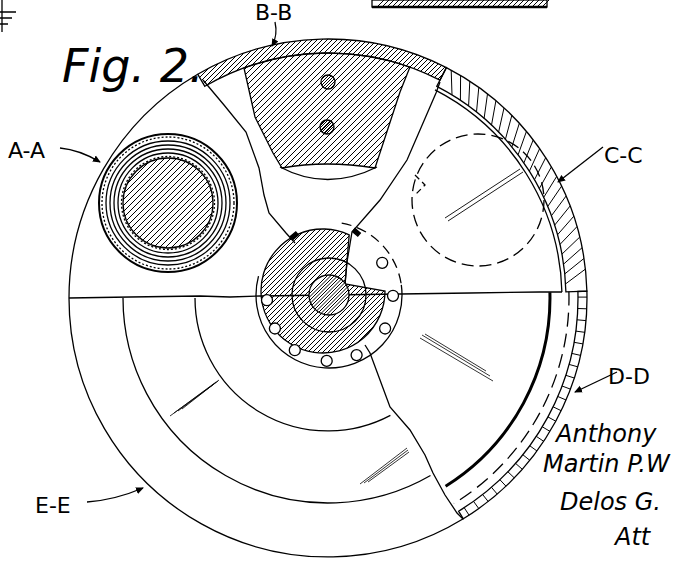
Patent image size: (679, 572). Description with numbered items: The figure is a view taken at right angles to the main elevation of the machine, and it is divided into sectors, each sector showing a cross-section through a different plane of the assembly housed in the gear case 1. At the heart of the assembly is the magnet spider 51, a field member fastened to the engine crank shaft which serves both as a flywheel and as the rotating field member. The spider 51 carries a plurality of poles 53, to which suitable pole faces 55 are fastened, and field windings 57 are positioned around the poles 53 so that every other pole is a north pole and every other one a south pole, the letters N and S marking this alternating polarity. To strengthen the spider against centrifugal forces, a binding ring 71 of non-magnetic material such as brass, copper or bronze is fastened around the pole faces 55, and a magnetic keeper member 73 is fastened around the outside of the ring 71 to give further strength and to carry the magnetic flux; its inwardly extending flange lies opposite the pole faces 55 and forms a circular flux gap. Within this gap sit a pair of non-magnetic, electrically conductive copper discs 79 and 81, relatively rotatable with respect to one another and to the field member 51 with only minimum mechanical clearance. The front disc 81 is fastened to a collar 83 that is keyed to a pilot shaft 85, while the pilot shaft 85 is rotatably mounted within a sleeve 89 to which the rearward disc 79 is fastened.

The gear case 1 is at (268, 356).
The magnet spider 51 is at (100, 266).
The poles 53 is at (137, 200).
The pole faces 55 is at (393, 70).
The field windings 57 is at (112, 178).
The binding ring 71 is at (447, 66).
The magnetic keeper member 73 is at (85, 367).
The rearward disc 79 is at (528, 312).
The front disc 81 is at (505, 227).
The collar 83 is at (341, 230).
The pilot shaft 85 is at (340, 281).
The sleeve 89 is at (392, 308).
The nut N is at (162, 168).
The block S is at (340, 58).